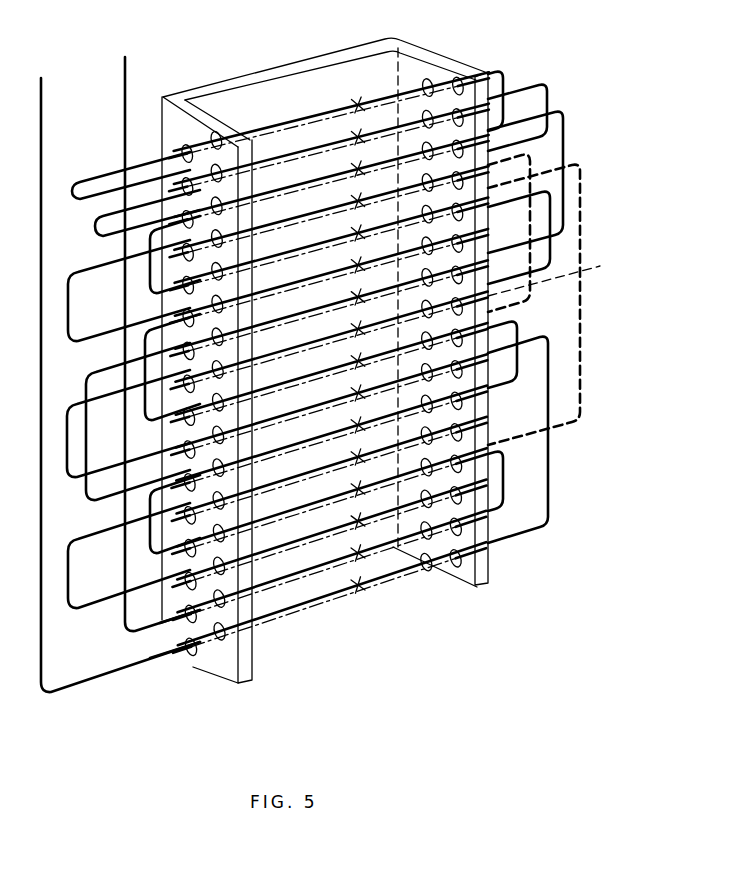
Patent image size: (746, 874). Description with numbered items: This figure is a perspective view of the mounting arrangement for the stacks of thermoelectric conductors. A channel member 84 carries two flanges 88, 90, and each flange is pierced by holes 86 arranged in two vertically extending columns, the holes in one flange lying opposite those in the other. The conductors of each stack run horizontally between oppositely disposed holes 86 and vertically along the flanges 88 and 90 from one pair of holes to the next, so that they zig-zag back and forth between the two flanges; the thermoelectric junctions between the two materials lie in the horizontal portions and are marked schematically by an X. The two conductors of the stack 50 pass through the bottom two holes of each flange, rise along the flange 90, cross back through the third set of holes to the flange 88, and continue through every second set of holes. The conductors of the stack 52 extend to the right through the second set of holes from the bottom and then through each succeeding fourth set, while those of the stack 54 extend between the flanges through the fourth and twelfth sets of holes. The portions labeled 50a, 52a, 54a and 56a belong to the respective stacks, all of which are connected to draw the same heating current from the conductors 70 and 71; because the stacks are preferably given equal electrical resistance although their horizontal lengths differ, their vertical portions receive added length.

The stack 50 is at (150, 630).
The first tube circuit return bend 50a is at (90, 196).
The stack 52 is at (112, 620).
The second tube circuit return bend 52a is at (108, 224).
The stack 54 is at (130, 545).
The third tube circuit return bend 54a is at (98, 286).
The fourth tube circuit return bend 56a is at (600, 280).
The conductor 70 is at (45, 88).
The conductor 71 is at (124, 90).
The channel member 84 is at (290, 92).
The holes 86 is at (190, 150).
The flange 88 is at (252, 652).
The flange 90 is at (487, 586).